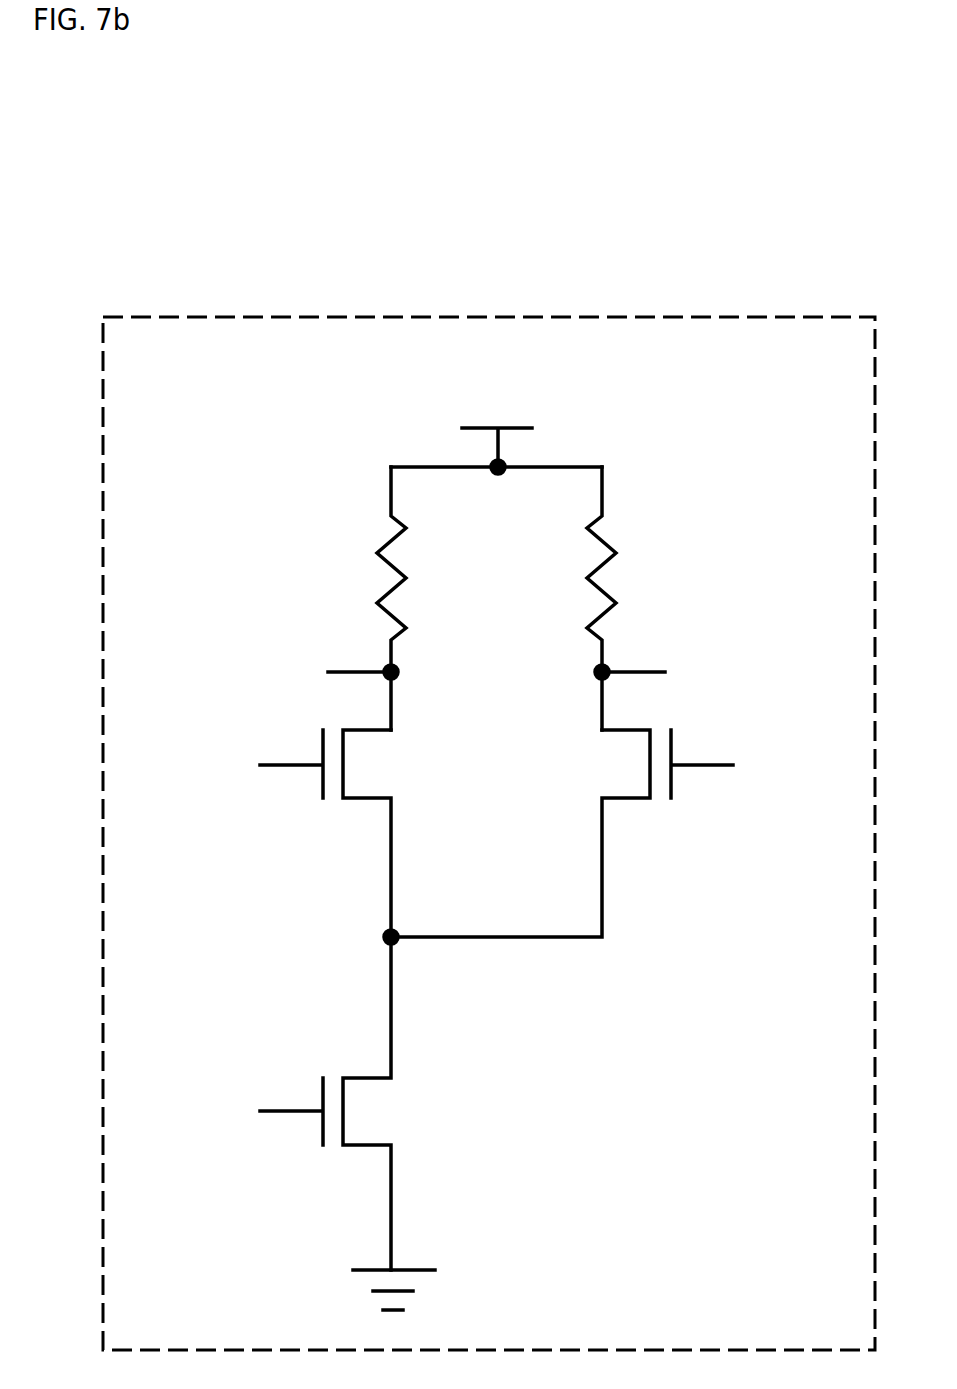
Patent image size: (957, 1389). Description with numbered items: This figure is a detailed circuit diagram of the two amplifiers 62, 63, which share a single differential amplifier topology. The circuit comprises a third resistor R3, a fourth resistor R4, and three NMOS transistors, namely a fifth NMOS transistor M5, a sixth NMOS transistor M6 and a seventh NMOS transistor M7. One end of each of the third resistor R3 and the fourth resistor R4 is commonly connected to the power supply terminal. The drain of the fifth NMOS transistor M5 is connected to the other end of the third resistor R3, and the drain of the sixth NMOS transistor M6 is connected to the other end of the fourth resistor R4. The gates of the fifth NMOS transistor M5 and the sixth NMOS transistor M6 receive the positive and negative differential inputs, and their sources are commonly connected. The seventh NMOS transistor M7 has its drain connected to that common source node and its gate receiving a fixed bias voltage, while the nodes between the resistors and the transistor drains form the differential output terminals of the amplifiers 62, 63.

The amplifier 62 is at (489, 724).
The amplifier 63 is at (640, 317).
The third resistor R3 is at (362, 598).
The fourth resistor R4 is at (630, 598).
The fifth NMOS transistor M5 is at (325, 833).
The sixth NMOS transistor M6 is at (562, 833).
The seventh NMOS transistor M7 is at (325, 1103).